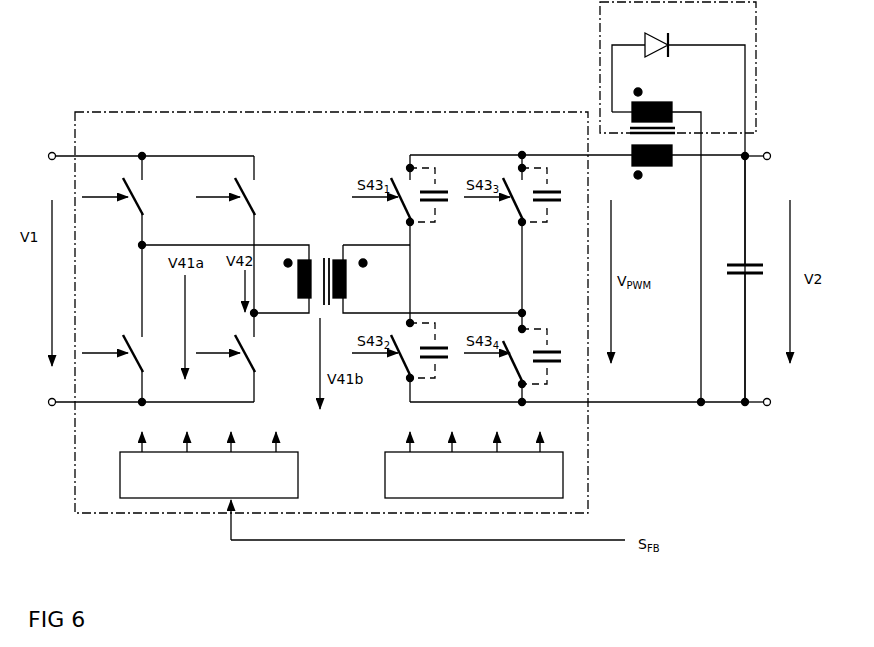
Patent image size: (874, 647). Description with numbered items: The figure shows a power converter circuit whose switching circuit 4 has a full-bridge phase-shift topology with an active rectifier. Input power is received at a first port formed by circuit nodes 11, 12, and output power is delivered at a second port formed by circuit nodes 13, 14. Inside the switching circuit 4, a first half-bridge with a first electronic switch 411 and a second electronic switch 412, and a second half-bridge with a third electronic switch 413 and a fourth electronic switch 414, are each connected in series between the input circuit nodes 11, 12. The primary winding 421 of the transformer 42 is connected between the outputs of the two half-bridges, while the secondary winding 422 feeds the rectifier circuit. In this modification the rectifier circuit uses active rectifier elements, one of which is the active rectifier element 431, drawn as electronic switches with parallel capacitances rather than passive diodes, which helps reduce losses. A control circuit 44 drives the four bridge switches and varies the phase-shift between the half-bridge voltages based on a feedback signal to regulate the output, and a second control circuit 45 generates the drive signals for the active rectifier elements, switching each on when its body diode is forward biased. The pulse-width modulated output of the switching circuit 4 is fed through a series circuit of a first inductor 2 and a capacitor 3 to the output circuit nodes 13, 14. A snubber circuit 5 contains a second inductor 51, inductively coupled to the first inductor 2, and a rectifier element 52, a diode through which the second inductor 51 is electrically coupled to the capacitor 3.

The first inductor 2 is at (664, 172).
The capacitor 3 is at (756, 263).
The switching circuit 4 is at (356, 112).
The snubber circuit 5 is at (599, 45).
The circuit node 11 is at (50, 149).
The circuit node 12 is at (50, 410).
The circuit node 13 is at (770, 148).
The circuit node 14 is at (770, 411).
The first electronic switch 411 is at (148, 199).
The second electronic switch 412 is at (148, 355).
The third electronic switch 413 is at (260, 199).
The fourth electronic switch 414 is at (262, 359).
The transformer 42 is at (328, 255).
The primary winding 421 is at (298, 290).
The secondary winding 422 is at (350, 290).
The active rectifier element 431 is at (440, 219).
The control circuit 44 is at (300, 459).
The control circuit 45 is at (386, 481).
The second inductor 51 is at (678, 102).
The rectifier element 52 is at (672, 35).